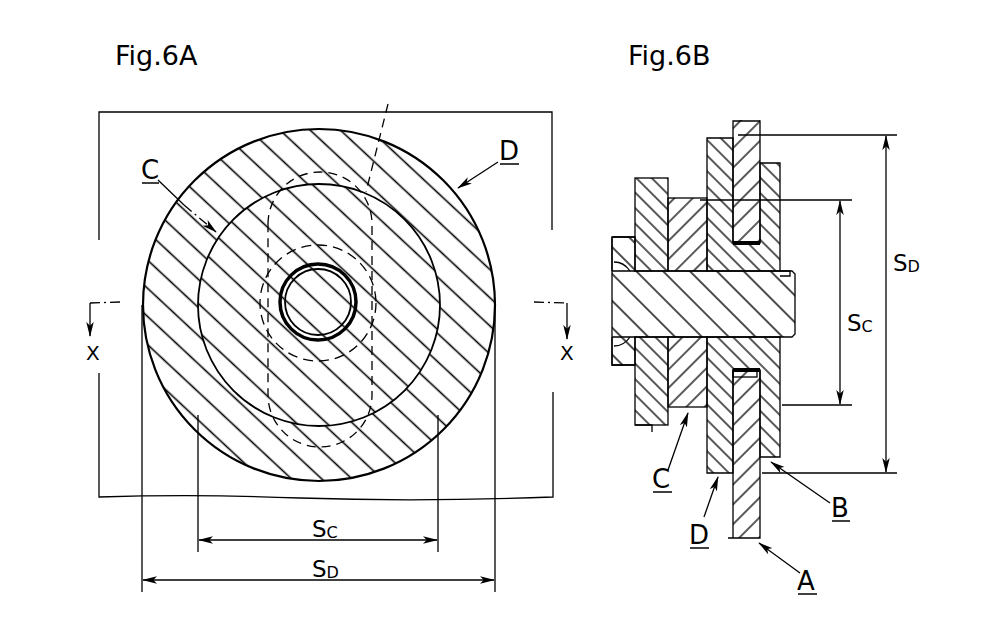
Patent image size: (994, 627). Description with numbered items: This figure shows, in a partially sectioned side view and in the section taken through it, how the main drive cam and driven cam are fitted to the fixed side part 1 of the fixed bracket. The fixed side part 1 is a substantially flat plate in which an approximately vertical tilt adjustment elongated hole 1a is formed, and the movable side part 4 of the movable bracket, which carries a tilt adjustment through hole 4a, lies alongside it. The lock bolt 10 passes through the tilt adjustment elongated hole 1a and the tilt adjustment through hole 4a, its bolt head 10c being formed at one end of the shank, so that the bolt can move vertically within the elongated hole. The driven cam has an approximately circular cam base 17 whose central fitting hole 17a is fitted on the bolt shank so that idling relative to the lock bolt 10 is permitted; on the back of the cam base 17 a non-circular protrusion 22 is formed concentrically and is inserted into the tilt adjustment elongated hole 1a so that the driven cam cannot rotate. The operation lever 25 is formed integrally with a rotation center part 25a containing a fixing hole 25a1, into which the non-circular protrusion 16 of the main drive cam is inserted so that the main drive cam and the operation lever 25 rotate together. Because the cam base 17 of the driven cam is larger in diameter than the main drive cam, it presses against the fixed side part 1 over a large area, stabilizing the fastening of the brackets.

In FIG. 6A, the fixed side part 1 is at (116, 145).
In FIG. 6B, the fixed side part 1 is at (771, 524).
In FIG. 6A, the tilt adjustment elongated hole 1a is at (389, 106).
In FIG. 6B, the tilt adjustment elongated hole 1a is at (781, 244).
In FIG. 6B, the movable side part 4 is at (782, 440).
In FIG. 6B, the tilt adjustment through hole 4a is at (783, 282).
In FIG. 6A, the lock bolt 10 is at (340, 296).
In FIG. 6B, the lock bolt 10 is at (787, 335).
In FIG. 6B, the bolt head 10c is at (626, 240).
In FIG. 6B, the protrusion 16 is at (644, 362).
In FIG. 6A, the cam base 17 is at (426, 166).
In FIG. 6A, the fitting hole 17a is at (346, 321).
In FIG. 6A, the protrusion 22 is at (268, 198).
In FIG. 6B, the protrusion 22 is at (765, 381).
In FIG. 6B, the operation lever 25 is at (634, 428).
In FIG. 6B, the rotation center part 25a is at (647, 440).
In FIG. 6B, the fixing hole 25a1 is at (622, 280).